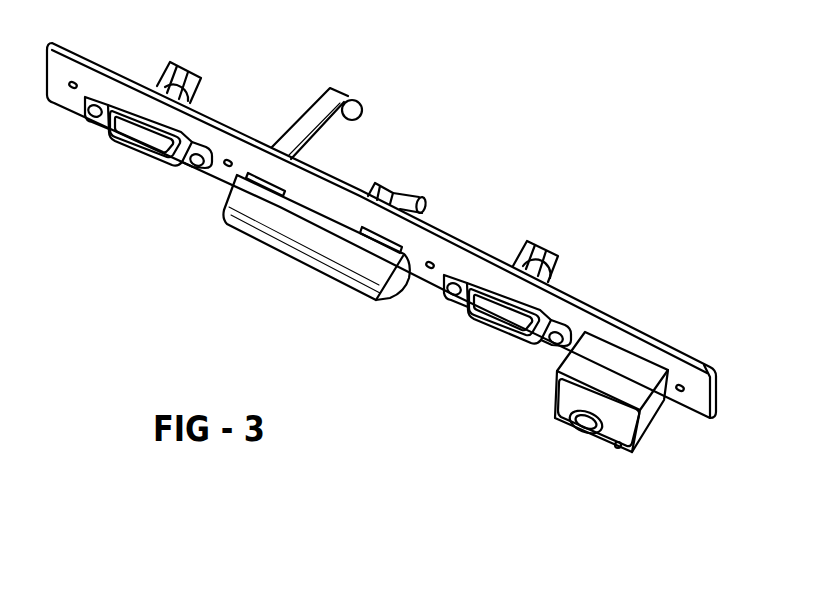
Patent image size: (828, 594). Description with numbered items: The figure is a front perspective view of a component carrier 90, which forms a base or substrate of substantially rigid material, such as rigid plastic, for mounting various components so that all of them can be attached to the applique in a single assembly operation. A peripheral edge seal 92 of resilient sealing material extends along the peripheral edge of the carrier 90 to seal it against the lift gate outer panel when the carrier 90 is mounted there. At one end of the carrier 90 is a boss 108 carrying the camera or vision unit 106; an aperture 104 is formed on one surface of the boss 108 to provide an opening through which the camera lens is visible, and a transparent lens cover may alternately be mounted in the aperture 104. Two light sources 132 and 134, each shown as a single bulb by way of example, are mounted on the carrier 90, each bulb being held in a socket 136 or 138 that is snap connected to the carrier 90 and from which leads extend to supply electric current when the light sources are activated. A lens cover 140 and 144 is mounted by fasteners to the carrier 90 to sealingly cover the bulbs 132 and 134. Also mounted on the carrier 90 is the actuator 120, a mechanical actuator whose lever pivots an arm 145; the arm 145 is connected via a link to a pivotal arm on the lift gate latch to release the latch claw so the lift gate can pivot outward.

The component carrier 90 is at (588, 331).
The peripheral edge seal 92 is at (662, 341).
The aperture 104 is at (582, 433).
The camera or vision unit 106 is at (616, 449).
The boss 108 is at (574, 373).
The actuator 120 is at (311, 275).
The light source 132 is at (481, 330).
The light source 134 is at (103, 139).
The socket 136 is at (546, 243).
The socket 138 is at (203, 92).
The lens cover 140 is at (464, 312).
The lens cover 144 is at (146, 161).
The arm 145 is at (317, 108).